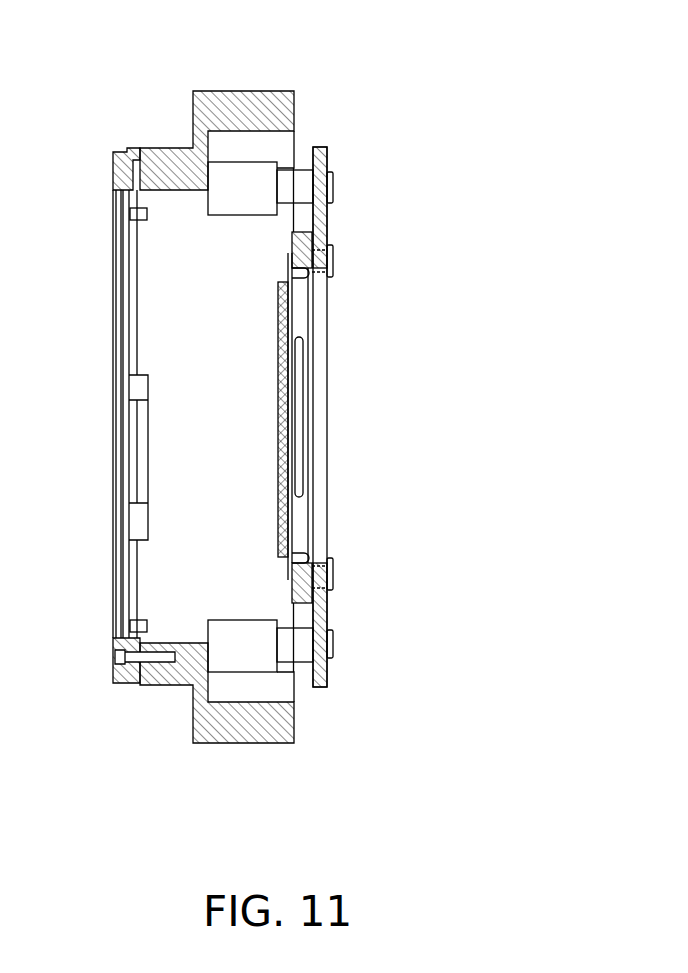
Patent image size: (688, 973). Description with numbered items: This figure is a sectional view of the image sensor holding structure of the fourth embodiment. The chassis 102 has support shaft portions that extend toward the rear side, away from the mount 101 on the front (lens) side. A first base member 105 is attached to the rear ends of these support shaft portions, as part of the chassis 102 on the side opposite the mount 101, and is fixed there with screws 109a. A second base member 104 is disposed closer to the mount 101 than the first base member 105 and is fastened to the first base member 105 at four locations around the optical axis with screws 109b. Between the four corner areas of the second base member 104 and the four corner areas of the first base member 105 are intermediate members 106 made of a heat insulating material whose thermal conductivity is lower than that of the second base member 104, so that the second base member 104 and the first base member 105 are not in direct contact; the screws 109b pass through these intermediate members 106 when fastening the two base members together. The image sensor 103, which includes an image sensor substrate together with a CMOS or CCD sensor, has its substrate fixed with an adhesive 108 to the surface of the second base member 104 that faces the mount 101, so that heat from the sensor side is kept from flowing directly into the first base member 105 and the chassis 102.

The mount 101 is at (115, 150).
The chassis 102 is at (222, 112).
The image sensor 103 is at (292, 365).
The second base member 104 is at (336, 172).
The first base member 105 is at (318, 148).
The intermediate member 106 is at (325, 250).
The adhesive 108 is at (313, 275).
The screw 109a is at (333, 193).
The screw 109b is at (334, 262).